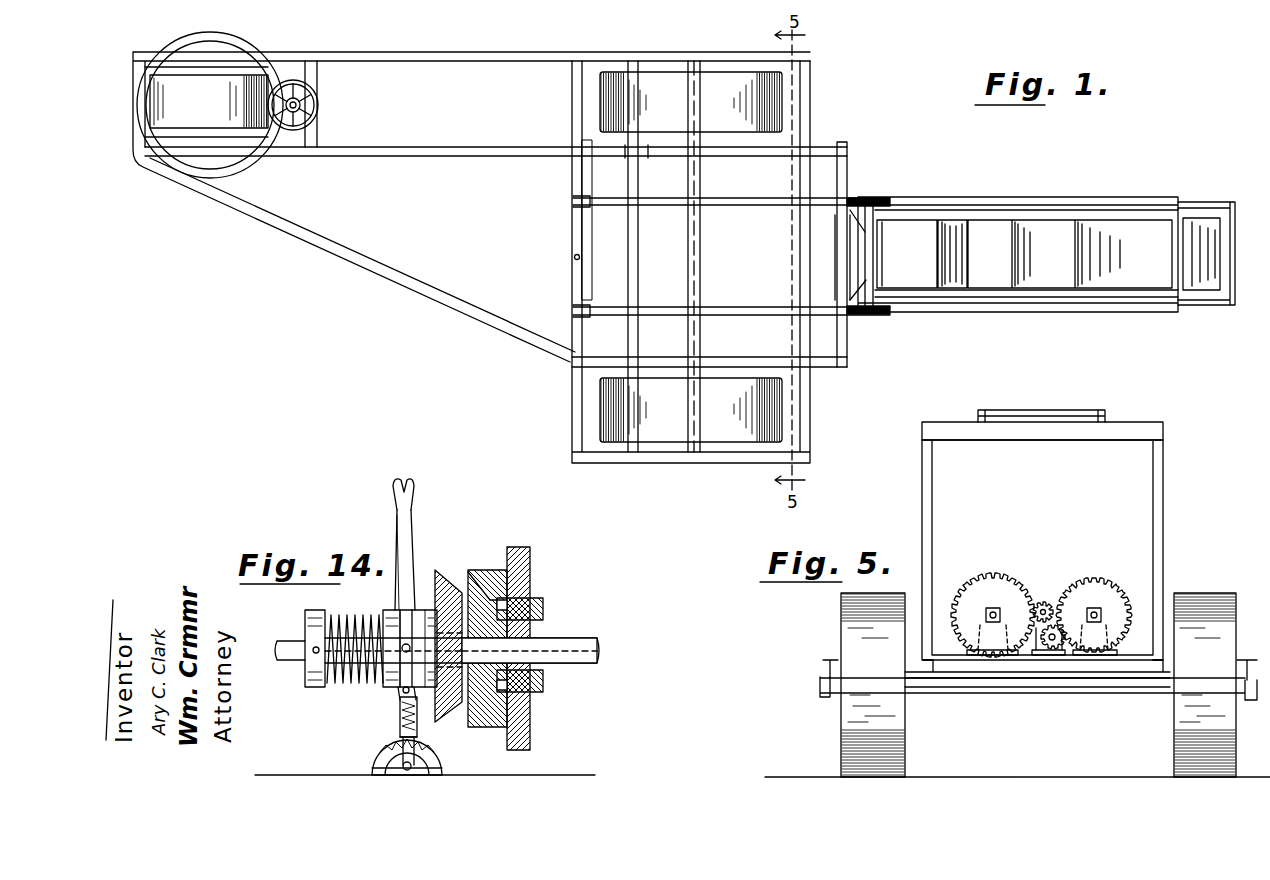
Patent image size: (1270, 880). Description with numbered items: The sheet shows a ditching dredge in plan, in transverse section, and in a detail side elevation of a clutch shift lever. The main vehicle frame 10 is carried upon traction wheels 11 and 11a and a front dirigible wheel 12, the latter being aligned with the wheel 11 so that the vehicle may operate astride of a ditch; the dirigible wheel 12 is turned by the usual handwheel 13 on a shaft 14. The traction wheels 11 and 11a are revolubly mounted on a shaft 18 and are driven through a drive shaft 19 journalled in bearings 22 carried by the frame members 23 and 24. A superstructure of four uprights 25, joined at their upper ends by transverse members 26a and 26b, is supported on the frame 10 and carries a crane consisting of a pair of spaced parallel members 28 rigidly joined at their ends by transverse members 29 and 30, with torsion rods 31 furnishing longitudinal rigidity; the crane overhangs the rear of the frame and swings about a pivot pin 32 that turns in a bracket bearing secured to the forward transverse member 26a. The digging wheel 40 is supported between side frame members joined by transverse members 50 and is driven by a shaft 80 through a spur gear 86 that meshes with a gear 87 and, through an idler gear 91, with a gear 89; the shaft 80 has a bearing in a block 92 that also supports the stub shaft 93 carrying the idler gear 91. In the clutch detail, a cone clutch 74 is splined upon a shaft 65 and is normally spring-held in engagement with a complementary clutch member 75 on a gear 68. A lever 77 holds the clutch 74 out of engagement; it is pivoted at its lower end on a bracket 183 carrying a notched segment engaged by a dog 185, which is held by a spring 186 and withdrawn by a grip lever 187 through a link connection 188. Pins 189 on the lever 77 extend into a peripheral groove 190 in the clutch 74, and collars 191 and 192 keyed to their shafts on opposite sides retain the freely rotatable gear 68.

In FIG. 1, the main vehicle frame 10 is at (478, 48).
In FIG. 5, the main vehicle frame 10 is at (813, 666).
In FIG. 1, the traction wheel 11 is at (691, 102).
In FIG. 5, the traction wheel 11 is at (1205, 685).
In FIG. 1, the traction wheel 11a is at (691, 410).
In FIG. 5, the traction wheel 11a is at (873, 685).
In FIG. 1, the front dirigible wheel 12 is at (210, 105).
In FIG. 1, the handwheel 13 is at (318, 100).
In FIG. 1, the shaft 14 is at (300, 113).
In FIG. 1, the shaft 18 is at (702, 258).
In FIG. 5, the shaft 18 is at (940, 688).
In FIG. 1, the drive shaft 19 is at (639, 258).
In FIG. 1, the bearings 22 is at (614, 155).
In FIG. 1, the frame member 23 is at (352, 262).
In FIG. 5, the frame member 23 is at (925, 668).
In FIG. 1, the frame member 24 is at (442, 148).
In FIG. 5, the frame member 24 is at (1153, 668).
In FIG. 5, the uprights 25 is at (932, 508).
In FIG. 1, the transverse member 26a is at (572, 183).
In FIG. 5, the transverse member 26a is at (1002, 433).
In FIG. 1, the transverse member 26b is at (850, 163).
In FIG. 1, the parallel members 28 is at (933, 198).
In FIG. 5, the parallel members 28 is at (978, 417).
In FIG. 1, the transverse member 29 is at (573, 236).
In FIG. 1, the transverse member 30 is at (1178, 222).
In FIG. 1, the torsion rods 31 is at (1010, 205).
In FIG. 1, the pivot pin 32 is at (575, 258).
In FIG. 1, the digging wheel 40 is at (1060, 236).
In FIG. 1, the transverse members 50 is at (882, 308).
In FIG. 14, the shaft 65 is at (565, 638).
In FIG. 14, the gear 68 is at (515, 582).
In FIG. 14, the cone clutch 74 is at (452, 712).
In FIG. 14, the complementary clutch member 75 is at (482, 570).
In FIG. 14, the lever 77 is at (413, 528).
In FIG. 5, the shaft 80 is at (1042, 601).
In FIG. 5, the spur gear 86 is at (1053, 622).
In FIG. 5, the gear 87 is at (980, 586).
In FIG. 5, the gear 89 is at (1108, 590).
In FIG. 5, the idler gear 91 is at (1060, 656).
In FIG. 5, the block 92 is at (1036, 656).
In FIG. 5, the stub shaft 93 is at (1047, 656).
In FIG. 14, the bracket 183 is at (375, 768).
In FIG. 14, the dog 185 is at (400, 710).
In FIG. 14, the spring 186 is at (401, 722).
In FIG. 14, the grip lever 187 is at (395, 490).
In FIG. 14, the link connection 188 is at (398, 530).
In FIG. 14, the pins 189 is at (408, 612).
In FIG. 14, the peripheral groove 190 is at (386, 615).
In FIG. 14, the collar 191 is at (522, 600).
In FIG. 14, the collar 192 is at (540, 682).